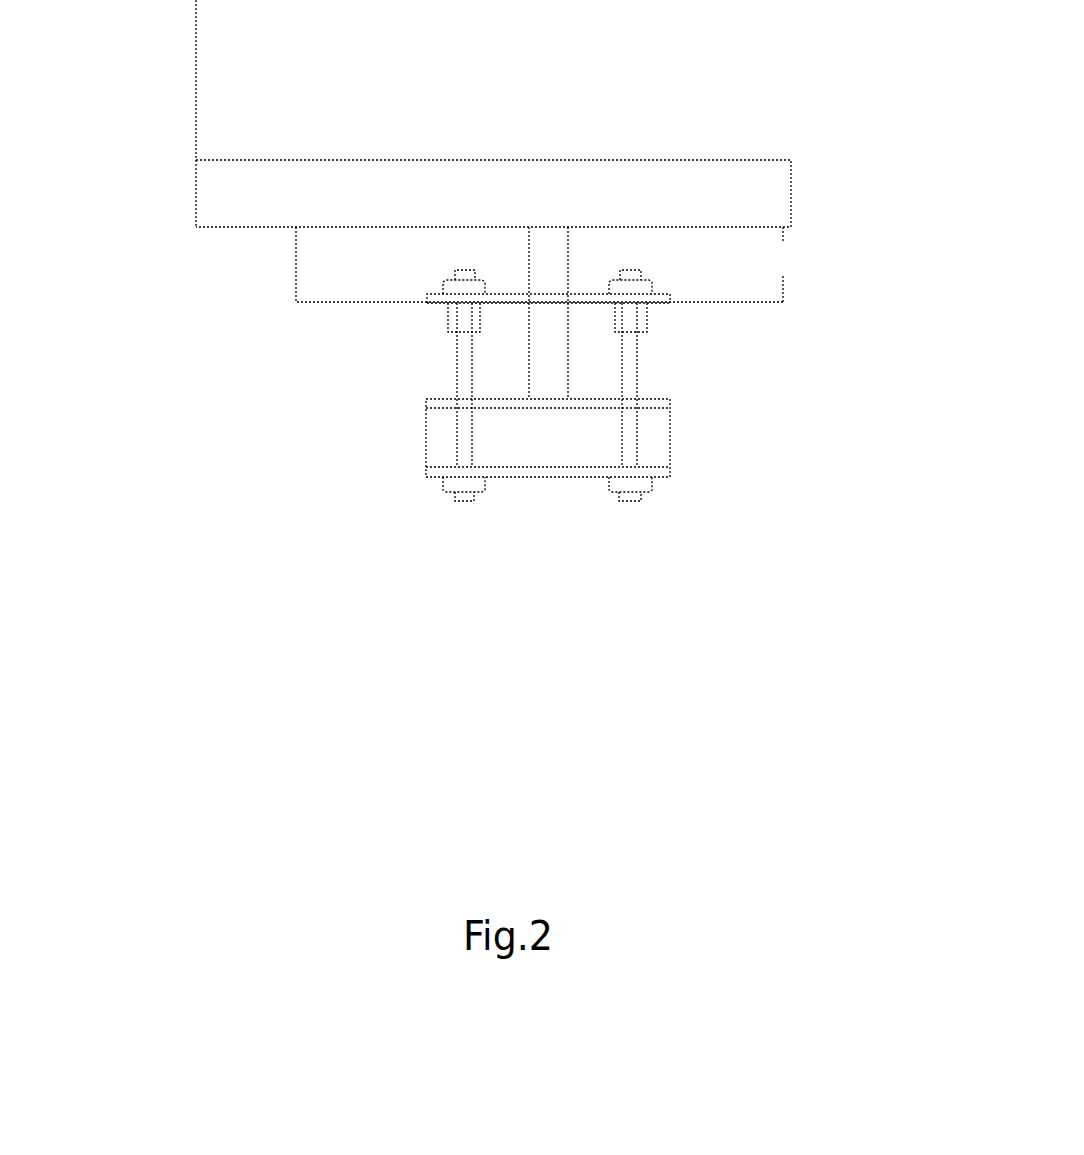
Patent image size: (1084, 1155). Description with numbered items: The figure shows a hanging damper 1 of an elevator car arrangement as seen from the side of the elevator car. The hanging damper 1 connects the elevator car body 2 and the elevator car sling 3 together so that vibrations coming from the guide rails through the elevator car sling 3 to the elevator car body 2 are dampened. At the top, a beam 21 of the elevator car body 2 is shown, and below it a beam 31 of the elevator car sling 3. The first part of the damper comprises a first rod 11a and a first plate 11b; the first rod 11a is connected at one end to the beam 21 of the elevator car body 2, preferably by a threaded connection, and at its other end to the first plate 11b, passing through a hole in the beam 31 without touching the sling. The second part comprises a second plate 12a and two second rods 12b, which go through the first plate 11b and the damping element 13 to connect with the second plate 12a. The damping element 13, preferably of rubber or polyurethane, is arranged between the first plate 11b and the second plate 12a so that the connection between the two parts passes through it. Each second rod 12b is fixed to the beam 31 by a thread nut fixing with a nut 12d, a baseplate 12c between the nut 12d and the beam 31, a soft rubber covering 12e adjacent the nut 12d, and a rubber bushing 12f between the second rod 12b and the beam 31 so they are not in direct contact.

The hanging damper 1 is at (526, 374).
The elevator car body 2 is at (428, 113).
The beam 21 is at (211, 193).
The elevator car sling 3 is at (493, 250).
The beam 31 is at (308, 243).
The first rod 11a is at (547, 252).
The first plate 11b is at (525, 499).
The second plate 12a is at (433, 475).
The second rod 12b is at (456, 375).
The baseplate 12c is at (437, 299).
The nut 12d is at (452, 273).
The soft rubber covering 12e is at (440, 287).
The rubber bushing 12f is at (448, 318).
The damping element 13 is at (457, 446).